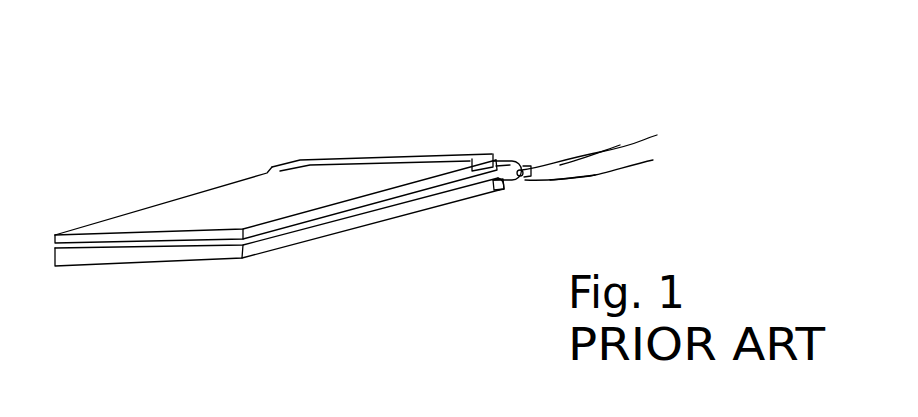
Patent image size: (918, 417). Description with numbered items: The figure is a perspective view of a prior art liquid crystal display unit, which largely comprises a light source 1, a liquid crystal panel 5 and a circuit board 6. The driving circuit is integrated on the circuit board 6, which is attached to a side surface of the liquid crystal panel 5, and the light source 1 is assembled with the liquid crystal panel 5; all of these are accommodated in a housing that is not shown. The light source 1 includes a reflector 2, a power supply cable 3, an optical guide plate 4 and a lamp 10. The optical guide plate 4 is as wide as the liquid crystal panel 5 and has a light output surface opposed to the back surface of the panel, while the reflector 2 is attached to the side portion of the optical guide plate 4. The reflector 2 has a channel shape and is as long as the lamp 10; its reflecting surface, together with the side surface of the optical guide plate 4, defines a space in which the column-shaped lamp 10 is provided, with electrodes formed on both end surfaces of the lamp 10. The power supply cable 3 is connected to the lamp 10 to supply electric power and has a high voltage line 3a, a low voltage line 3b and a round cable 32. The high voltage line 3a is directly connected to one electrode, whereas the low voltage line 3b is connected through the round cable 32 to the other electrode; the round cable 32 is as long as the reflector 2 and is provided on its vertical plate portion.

The light source 1 is at (513, 148).
The reflector 2 is at (473, 197).
The power supply cable 3 is at (575, 68).
The high voltage line 3a is at (560, 180).
The low voltage line 3b is at (578, 153).
The optical guide plate 4 is at (300, 241).
The liquid crystal panel 5 is at (213, 198).
The circuit board 6 is at (437, 156).
The lamp 10 is at (512, 188).
The round cable 32 is at (531, 166).